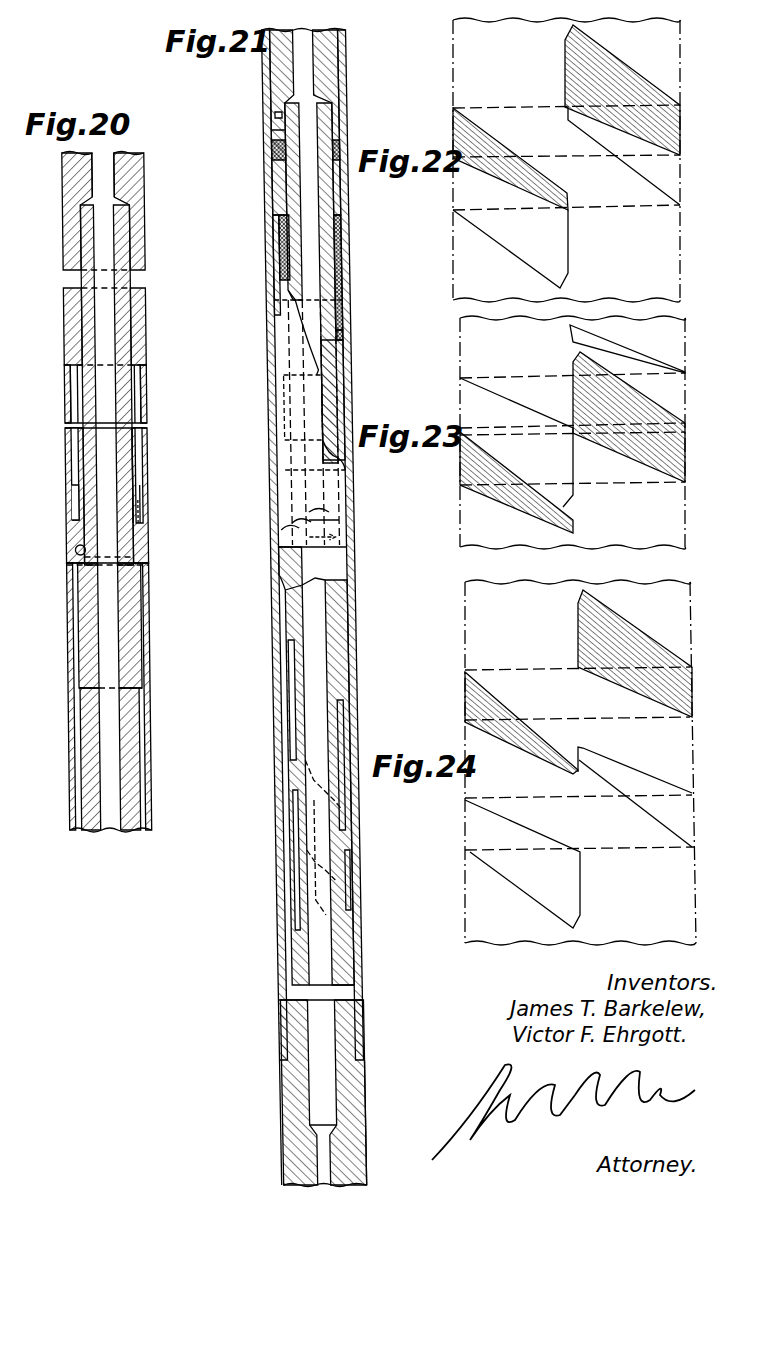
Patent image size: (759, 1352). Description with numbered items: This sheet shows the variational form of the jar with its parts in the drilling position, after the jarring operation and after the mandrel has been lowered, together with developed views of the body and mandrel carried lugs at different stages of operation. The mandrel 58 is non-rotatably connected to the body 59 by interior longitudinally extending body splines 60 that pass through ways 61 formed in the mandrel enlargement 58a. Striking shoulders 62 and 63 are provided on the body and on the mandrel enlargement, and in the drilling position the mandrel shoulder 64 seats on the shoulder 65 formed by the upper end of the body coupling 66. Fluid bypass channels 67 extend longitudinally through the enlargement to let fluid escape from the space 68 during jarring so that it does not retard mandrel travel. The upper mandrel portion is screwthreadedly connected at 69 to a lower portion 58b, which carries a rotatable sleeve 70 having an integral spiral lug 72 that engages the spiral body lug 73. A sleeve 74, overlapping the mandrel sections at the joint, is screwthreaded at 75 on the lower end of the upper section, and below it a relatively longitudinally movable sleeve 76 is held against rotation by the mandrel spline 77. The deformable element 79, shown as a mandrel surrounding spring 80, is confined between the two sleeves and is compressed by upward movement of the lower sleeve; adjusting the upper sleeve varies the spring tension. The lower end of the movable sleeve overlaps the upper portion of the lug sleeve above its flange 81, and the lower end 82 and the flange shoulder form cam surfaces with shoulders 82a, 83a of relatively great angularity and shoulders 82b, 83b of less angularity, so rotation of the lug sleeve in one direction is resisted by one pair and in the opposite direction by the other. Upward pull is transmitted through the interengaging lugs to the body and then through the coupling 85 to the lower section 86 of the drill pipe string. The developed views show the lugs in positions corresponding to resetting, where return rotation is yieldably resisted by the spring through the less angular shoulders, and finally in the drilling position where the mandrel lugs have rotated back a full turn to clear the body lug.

In FIG. 20, the mandrel 58 is at (122, 403).
In FIG. 20, the mandrel enlargement 58a is at (132, 496).
In FIG. 21, the lower mandrel portion 58b is at (312, 278).
In FIG. 20, the body 59 is at (137, 530).
In FIG. 20, the body splines 60 is at (136, 448).
In FIG. 20, the ways 61 is at (142, 516).
In FIG. 20, the striking shoulder 62 is at (66, 390).
In FIG. 20, the striking shoulder 63 is at (70, 486).
In FIG. 20, the mandrel shoulder 64 is at (138, 568).
In FIG. 20, the shoulder 65 is at (69, 551).
In FIG. 20, the body coupling 66 is at (72, 622).
In FIG. 20, the fluid bypass channels 67 is at (136, 505).
In FIG. 20, the space 68 is at (73, 445).
In FIG. 21, the screwthreaded connection 69 is at (268, 147).
In FIG. 21, the rotatable sleeve 70 is at (335, 617).
In FIG. 21, the spiral lug 72 is at (288, 755).
In FIG. 22, the spiral lug 72 is at (465, 191).
In FIG. 23, the spiral lug 72 is at (472, 398).
In FIG. 24, the spiral lug 72 is at (482, 826).
In FIG. 21, the spiral body lug 73 is at (275, 630).
In FIG. 22, the spiral body lug 73 is at (462, 133).
In FIG. 23, the spiral body lug 73 is at (470, 470).
In FIG. 24, the spiral body lug 73 is at (468, 696).
In FIG. 21, the sleeve 74 is at (334, 203).
In FIG. 21, the screwthread 75 is at (325, 137).
In FIG. 21, the longitudinally movable sleeve 76 is at (338, 398).
In FIG. 21, the mandrel spline 77 is at (338, 462).
In FIG. 21, the deformable element 79 is at (332, 307).
In FIG. 21, the spring 80 is at (334, 349).
In FIG. 21, the flange 81 is at (337, 547).
In FIG. 21, the lower end of sleeve 82 is at (315, 513).
In FIG. 21, the cam shoulder 82a is at (318, 520).
In FIG. 21, the cam shoulder 82b is at (282, 529).
In FIG. 21, the cam shoulder 83a is at (300, 520).
In FIG. 21, the cam shoulder 83b is at (322, 500).
In FIG. 21, the coupling 85 is at (330, 1067).
In FIG. 21, the lower section of drill pipe 86 is at (333, 1158).